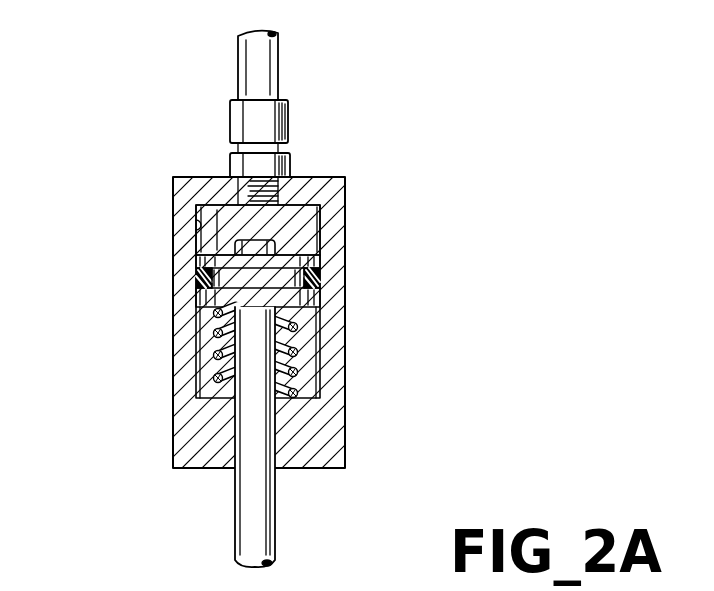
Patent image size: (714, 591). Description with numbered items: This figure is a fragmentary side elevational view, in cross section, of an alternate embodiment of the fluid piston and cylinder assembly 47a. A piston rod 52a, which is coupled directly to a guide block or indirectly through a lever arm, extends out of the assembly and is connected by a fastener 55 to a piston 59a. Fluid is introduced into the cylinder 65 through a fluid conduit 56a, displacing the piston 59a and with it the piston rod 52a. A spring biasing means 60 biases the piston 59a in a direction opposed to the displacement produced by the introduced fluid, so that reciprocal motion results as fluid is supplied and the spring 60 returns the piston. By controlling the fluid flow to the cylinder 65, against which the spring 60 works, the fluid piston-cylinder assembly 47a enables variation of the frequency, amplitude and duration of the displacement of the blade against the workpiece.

The fluid piston-cylinder assembly 47a is at (140, 367).
The piston rod 52a is at (277, 517).
The fastener 55 is at (267, 241).
The fluid conduit 56a is at (279, 63).
The piston 59a is at (303, 254).
The spring biasing means 60 is at (297, 353).
The cylinder 65 is at (200, 230).